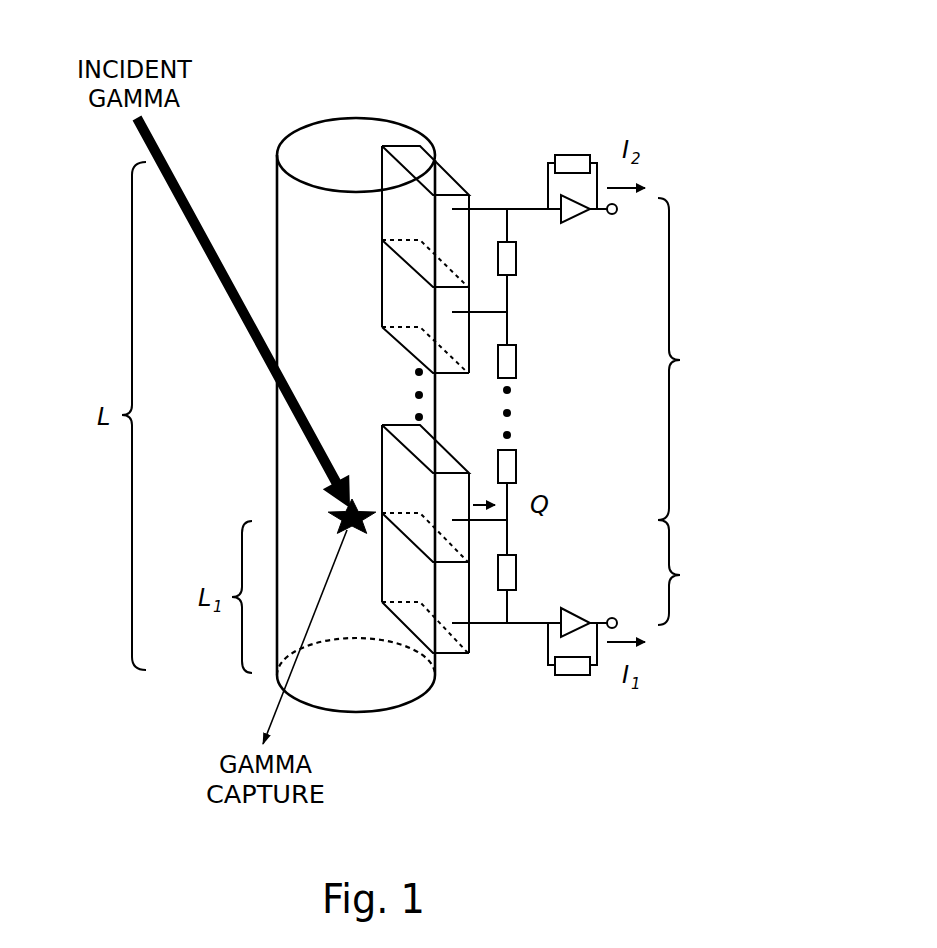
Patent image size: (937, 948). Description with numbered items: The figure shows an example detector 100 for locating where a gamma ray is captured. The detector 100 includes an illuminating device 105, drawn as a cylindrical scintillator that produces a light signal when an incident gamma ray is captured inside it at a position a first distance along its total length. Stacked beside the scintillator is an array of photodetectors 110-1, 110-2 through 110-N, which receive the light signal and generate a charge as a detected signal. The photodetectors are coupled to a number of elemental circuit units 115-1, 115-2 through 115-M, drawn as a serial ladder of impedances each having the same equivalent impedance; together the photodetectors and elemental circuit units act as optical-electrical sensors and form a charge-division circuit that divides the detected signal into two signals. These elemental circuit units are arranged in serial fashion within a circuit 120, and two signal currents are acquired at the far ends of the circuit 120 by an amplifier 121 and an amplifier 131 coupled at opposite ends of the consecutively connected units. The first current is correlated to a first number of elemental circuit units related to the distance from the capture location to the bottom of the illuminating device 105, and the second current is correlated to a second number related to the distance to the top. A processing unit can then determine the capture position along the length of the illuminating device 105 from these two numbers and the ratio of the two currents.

The detector 100 is at (294, 56).
The illuminating device 105 is at (355, 135).
The photodetector 110-N is at (457, 332).
The photodetector 110-2 is at (457, 532).
The photodetector 110-1 is at (450, 657).
The elemental circuit unit 115-M is at (516, 255).
The elemental circuit unit 115-2 is at (516, 467).
The elemental circuit unit 115-1 is at (516, 573).
The amplifier 131 is at (577, 154).
The amplifier 121 is at (573, 675).
The circuit 120 is at (714, 296).